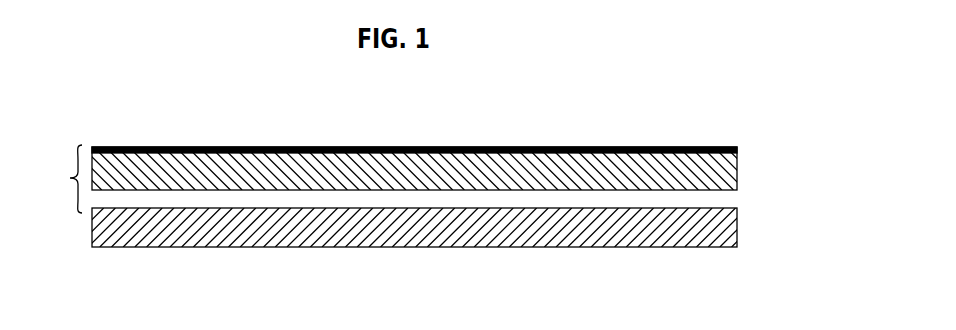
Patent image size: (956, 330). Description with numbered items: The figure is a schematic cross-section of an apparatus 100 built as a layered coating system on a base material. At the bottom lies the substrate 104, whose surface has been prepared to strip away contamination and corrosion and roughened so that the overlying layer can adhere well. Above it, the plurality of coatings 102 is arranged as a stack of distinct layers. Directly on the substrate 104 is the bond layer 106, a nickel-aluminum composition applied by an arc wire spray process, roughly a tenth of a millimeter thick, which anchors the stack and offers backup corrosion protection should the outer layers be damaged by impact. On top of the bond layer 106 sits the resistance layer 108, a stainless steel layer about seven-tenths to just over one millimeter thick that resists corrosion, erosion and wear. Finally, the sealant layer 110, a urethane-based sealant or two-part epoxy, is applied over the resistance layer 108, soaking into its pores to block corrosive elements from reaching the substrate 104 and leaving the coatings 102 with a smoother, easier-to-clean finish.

The apparatus 100 is at (115, 105).
The coatings 102 is at (53, 179).
The substrate 104 is at (752, 247).
The bond layer 106 is at (755, 202).
The resistance layer 108 is at (753, 158).
The sealant layer 110 is at (712, 138).